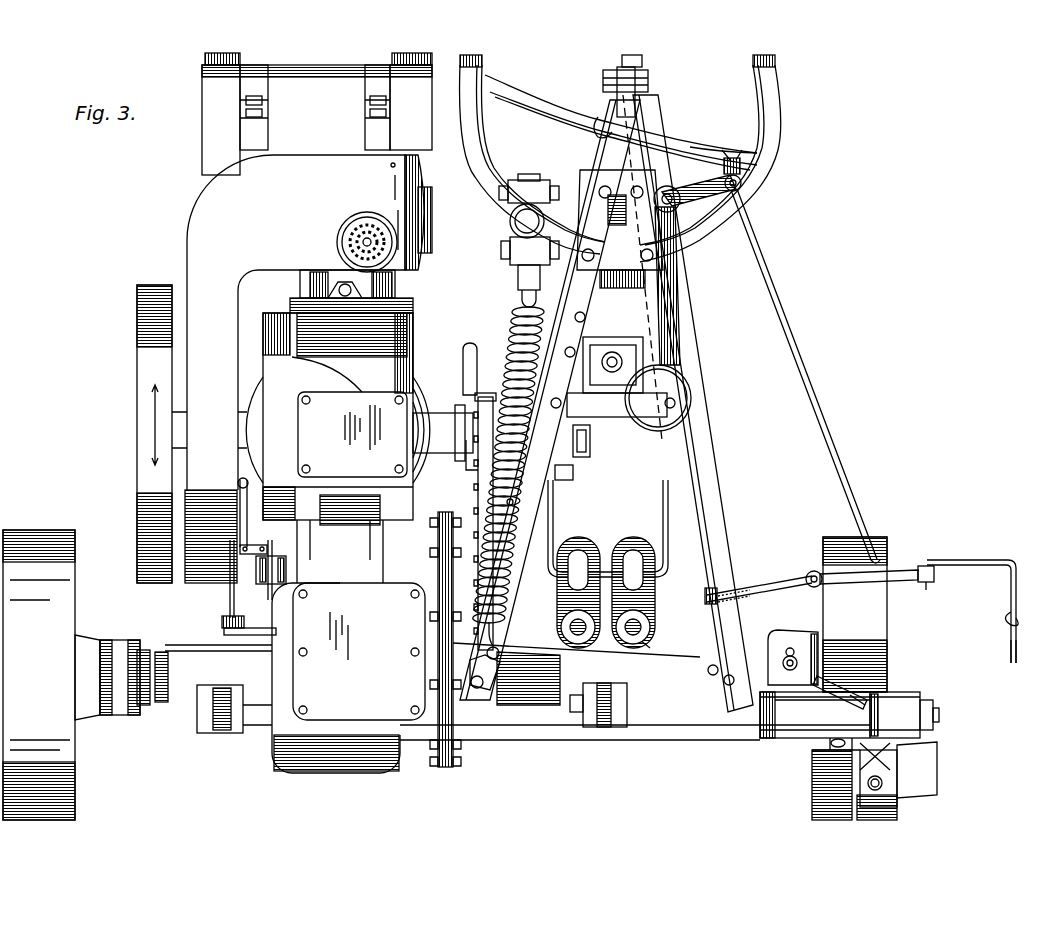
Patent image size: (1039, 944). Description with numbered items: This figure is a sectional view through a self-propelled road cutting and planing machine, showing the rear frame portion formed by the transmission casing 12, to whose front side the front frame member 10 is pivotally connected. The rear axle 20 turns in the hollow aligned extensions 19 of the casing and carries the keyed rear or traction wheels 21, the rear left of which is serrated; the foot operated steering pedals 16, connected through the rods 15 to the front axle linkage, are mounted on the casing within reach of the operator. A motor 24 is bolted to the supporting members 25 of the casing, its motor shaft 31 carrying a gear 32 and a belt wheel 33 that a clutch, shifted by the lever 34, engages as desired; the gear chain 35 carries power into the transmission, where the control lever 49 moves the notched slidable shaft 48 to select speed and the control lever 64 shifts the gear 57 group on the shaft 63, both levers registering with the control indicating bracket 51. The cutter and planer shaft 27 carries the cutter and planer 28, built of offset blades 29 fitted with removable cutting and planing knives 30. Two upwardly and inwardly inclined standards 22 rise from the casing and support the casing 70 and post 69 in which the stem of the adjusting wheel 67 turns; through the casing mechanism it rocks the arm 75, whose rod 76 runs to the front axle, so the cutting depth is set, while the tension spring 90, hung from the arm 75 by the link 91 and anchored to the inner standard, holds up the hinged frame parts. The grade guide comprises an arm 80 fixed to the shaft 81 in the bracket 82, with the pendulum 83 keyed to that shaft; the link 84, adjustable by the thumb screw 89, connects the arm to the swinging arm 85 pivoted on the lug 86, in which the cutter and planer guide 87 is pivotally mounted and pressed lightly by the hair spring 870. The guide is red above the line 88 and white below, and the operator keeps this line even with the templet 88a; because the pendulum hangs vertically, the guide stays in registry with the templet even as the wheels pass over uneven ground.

The front frame member 10 is at (197, 718).
The transmission casing 12 is at (300, 772).
The rods 15 is at (646, 624).
The foot operated steering pedals 16 is at (626, 546).
The hollow aligned extensions 19 is at (143, 650).
The rear axle 20 is at (160, 703).
The rear or traction wheels 21 is at (888, 537).
The upwardly and inwardly inclined standards 22 is at (600, 507).
The motor 24 is at (410, 338).
The supporting members 25 is at (388, 508).
The cutter and planer shaft 27 is at (940, 716).
The cutter and planer 28 is at (863, 702).
The blades 29 is at (890, 700).
The cutting and planing knives 30 is at (826, 676).
The motor shaft 31 is at (470, 458).
The gear 32 is at (482, 395).
The belt wheel 33 is at (573, 473).
The lever 34 is at (464, 352).
The gear chain 35 is at (514, 502).
The slidable shaft 48 is at (266, 547).
The control lever 49 is at (242, 522).
The control indicating bracket 51 is at (240, 495).
The gear 57 is at (280, 563).
The shaft 63 is at (250, 632).
The control lever 64 is at (222, 622).
The adjusting wheel 67 is at (782, 90).
The post 69 is at (598, 120).
The casing 70 is at (630, 332).
The arm 75 is at (528, 180).
The rod 76 is at (510, 222).
The arm 80 is at (705, 192).
The shaft 81 is at (728, 180).
The bracket 82 is at (670, 190).
The pendulum 83 is at (680, 350).
The link 84 is at (804, 372).
The swinging arm 85 is at (882, 572).
The lug 86 is at (762, 590).
The cutter and planer guide 87 is at (1010, 560).
The hair spring 870 is at (936, 576).
The line 88 is at (1011, 630).
The templet 88a is at (1011, 616).
The thumb screw 89 is at (745, 180).
The tension spring 90 is at (512, 320).
The link 91 is at (518, 276).